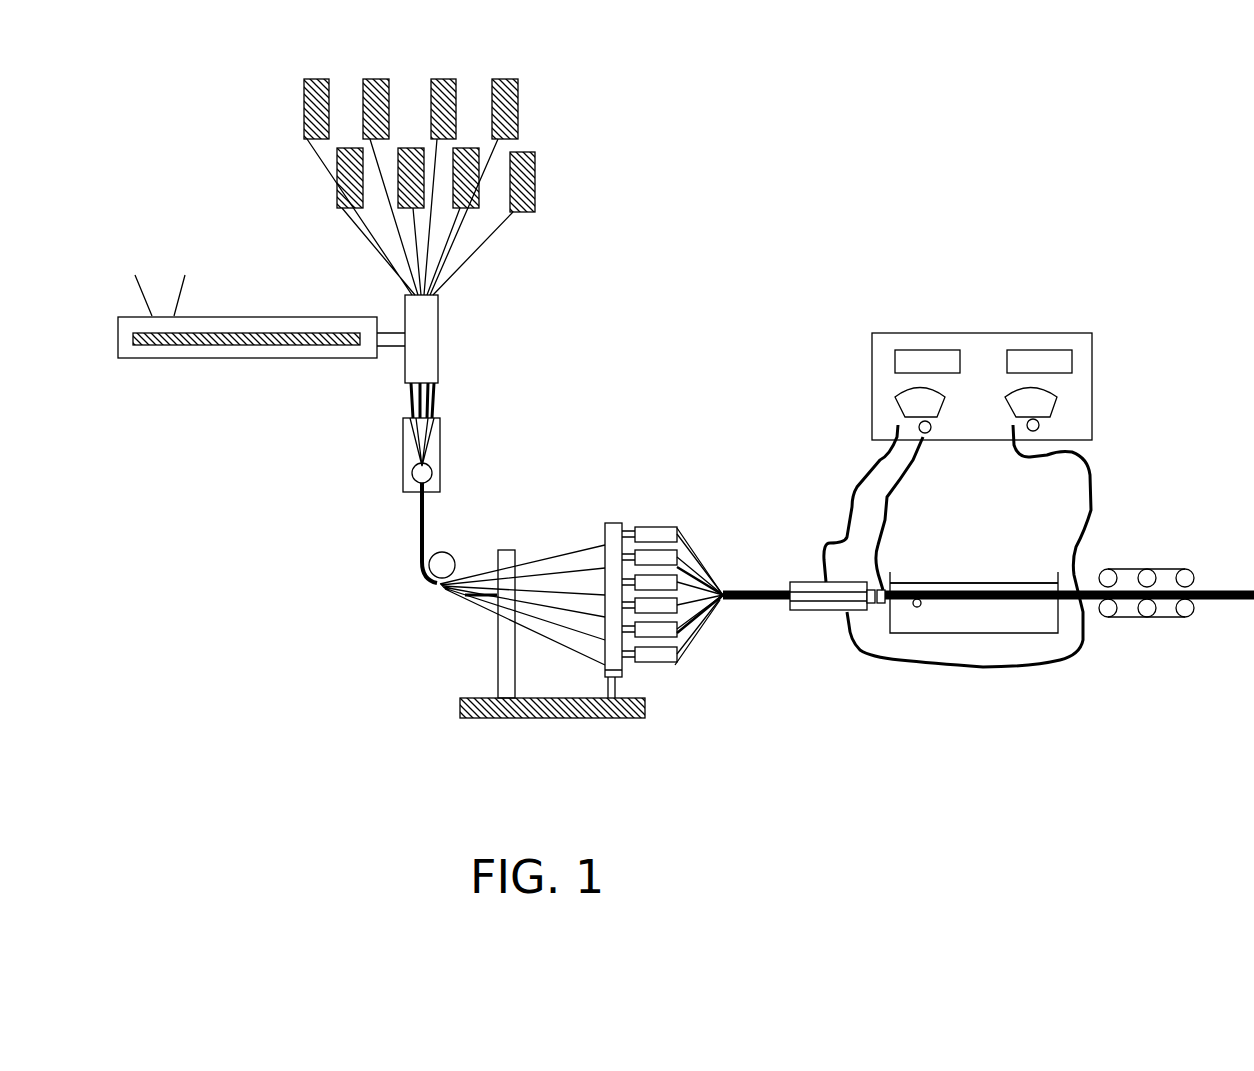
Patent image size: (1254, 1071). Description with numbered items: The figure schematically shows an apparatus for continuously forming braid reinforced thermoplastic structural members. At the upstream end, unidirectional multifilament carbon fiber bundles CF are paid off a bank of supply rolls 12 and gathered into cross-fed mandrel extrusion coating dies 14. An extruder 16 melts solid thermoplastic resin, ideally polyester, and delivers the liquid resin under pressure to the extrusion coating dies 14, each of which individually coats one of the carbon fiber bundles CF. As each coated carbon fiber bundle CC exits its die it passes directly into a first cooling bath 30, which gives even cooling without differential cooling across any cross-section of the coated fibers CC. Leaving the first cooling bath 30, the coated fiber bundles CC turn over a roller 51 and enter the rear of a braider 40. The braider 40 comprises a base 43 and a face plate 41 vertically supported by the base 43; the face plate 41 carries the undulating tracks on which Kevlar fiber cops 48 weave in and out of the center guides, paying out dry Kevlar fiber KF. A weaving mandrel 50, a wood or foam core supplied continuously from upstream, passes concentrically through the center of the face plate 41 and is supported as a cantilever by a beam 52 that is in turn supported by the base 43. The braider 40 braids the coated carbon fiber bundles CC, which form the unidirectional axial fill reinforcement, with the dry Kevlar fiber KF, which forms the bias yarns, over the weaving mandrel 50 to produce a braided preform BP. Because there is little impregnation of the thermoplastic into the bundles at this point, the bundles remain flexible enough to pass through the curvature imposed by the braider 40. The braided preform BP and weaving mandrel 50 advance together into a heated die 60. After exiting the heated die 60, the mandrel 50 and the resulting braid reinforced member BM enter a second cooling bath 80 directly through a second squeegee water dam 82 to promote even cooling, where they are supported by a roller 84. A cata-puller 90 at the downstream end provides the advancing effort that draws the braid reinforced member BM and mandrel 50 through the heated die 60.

The supply rolls 12 is at (480, 155).
The carbon fiber bundles CF is at (460, 240).
The extrusion coating dies 14 is at (437, 350).
The extruder 16 is at (213, 358).
The first cooling bath 30 is at (438, 458).
The coated carbon fiber bundles CC is at (400, 523).
The roller 51 is at (447, 552).
The weaving mandrel 50 is at (537, 590).
The beam 52 is at (495, 665).
The base 43 is at (518, 718).
The face plate 41 is at (618, 677).
The Kevlar fiber cops 48 is at (670, 664).
The braider 40 is at (649, 508).
The Kevlar fiber KF is at (702, 620).
The braided preform BP is at (773, 590).
The heated die 60 is at (808, 612).
The second cooling bath 80 is at (1013, 627).
The second squeegee water dam 82 is at (897, 603).
The roller 84 is at (920, 607).
The cata-puller 90 is at (1178, 617).
The braid reinforced member BM is at (1090, 587).